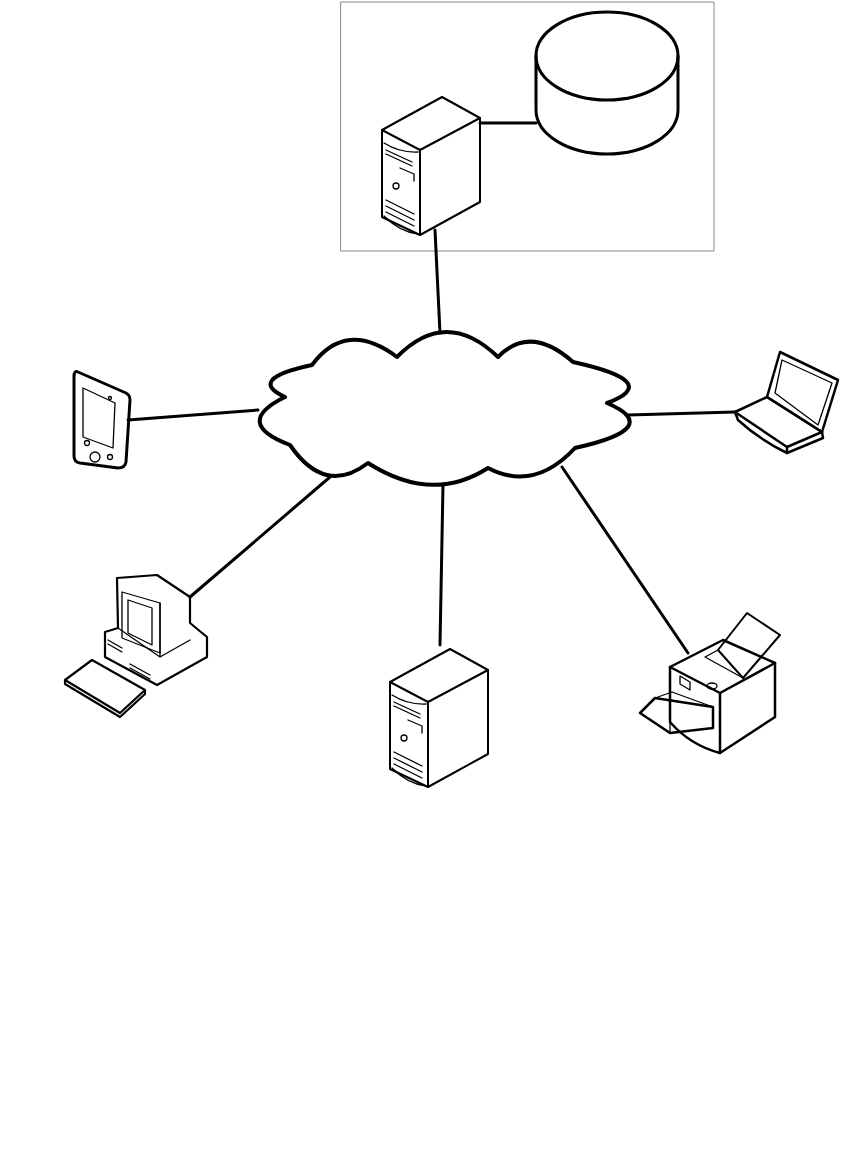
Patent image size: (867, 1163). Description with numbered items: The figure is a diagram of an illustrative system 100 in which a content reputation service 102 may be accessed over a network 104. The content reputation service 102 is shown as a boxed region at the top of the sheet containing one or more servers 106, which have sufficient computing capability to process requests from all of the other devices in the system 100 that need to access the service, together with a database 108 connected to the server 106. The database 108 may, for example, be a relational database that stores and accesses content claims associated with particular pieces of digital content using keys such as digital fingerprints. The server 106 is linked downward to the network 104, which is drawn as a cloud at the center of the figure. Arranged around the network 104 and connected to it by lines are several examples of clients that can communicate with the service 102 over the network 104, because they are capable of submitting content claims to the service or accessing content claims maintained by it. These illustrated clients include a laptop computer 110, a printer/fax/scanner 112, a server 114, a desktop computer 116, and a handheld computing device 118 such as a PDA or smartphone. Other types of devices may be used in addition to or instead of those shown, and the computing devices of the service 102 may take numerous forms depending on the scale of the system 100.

The system 100 is at (258, 90).
The content reputation service 102 is at (400, 56).
The network 104 is at (462, 415).
The server 106 is at (473, 188).
The database 108 is at (622, 63).
The laptop computer 110 is at (763, 445).
The printer/fax/scanner 112 is at (670, 665).
The server 114 is at (488, 697).
The desktop computer 116 is at (207, 638).
The handheld computing device 118 is at (130, 393).